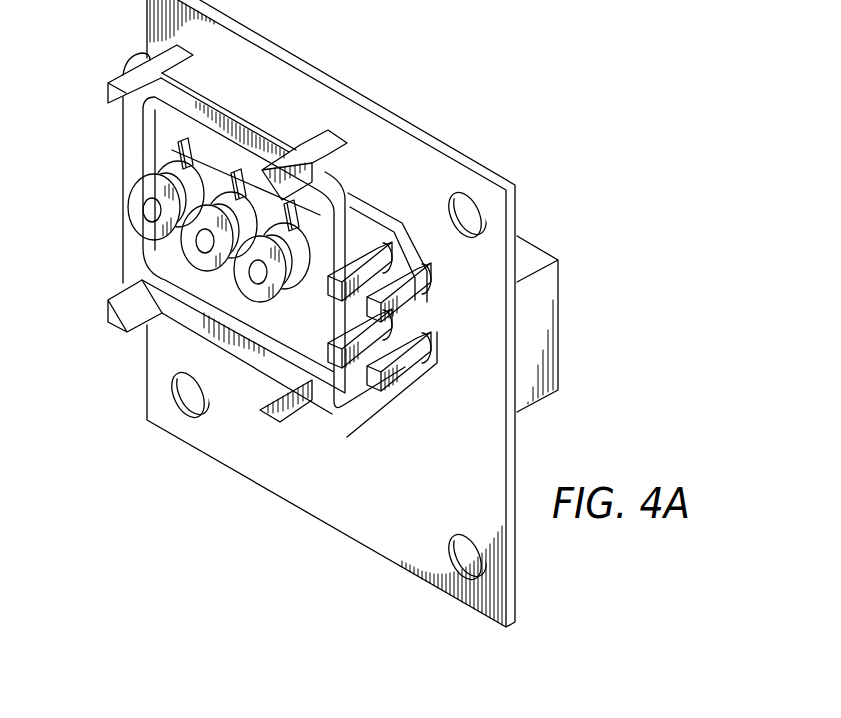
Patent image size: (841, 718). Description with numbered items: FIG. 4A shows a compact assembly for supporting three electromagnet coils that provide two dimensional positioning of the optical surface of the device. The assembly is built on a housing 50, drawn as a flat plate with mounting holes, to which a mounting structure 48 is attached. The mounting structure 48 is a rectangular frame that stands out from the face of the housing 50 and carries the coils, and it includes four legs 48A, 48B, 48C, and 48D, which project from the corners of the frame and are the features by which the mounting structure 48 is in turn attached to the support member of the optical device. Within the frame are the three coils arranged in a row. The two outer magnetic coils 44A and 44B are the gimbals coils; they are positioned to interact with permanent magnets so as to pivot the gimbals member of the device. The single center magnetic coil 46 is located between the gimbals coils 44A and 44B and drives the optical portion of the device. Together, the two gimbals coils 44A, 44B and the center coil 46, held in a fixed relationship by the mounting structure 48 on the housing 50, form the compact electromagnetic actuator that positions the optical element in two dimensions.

The housing 50 is at (445, 472).
The mounting structure 48 is at (122, 158).
The leg 48A is at (282, 148).
The leg 48B is at (110, 92).
The leg 48C is at (117, 326).
The leg 48D is at (290, 414).
The magnetic coil 44A is at (136, 206).
The magnetic coil 44B is at (286, 232).
The center magnetic coil 46 is at (215, 274).